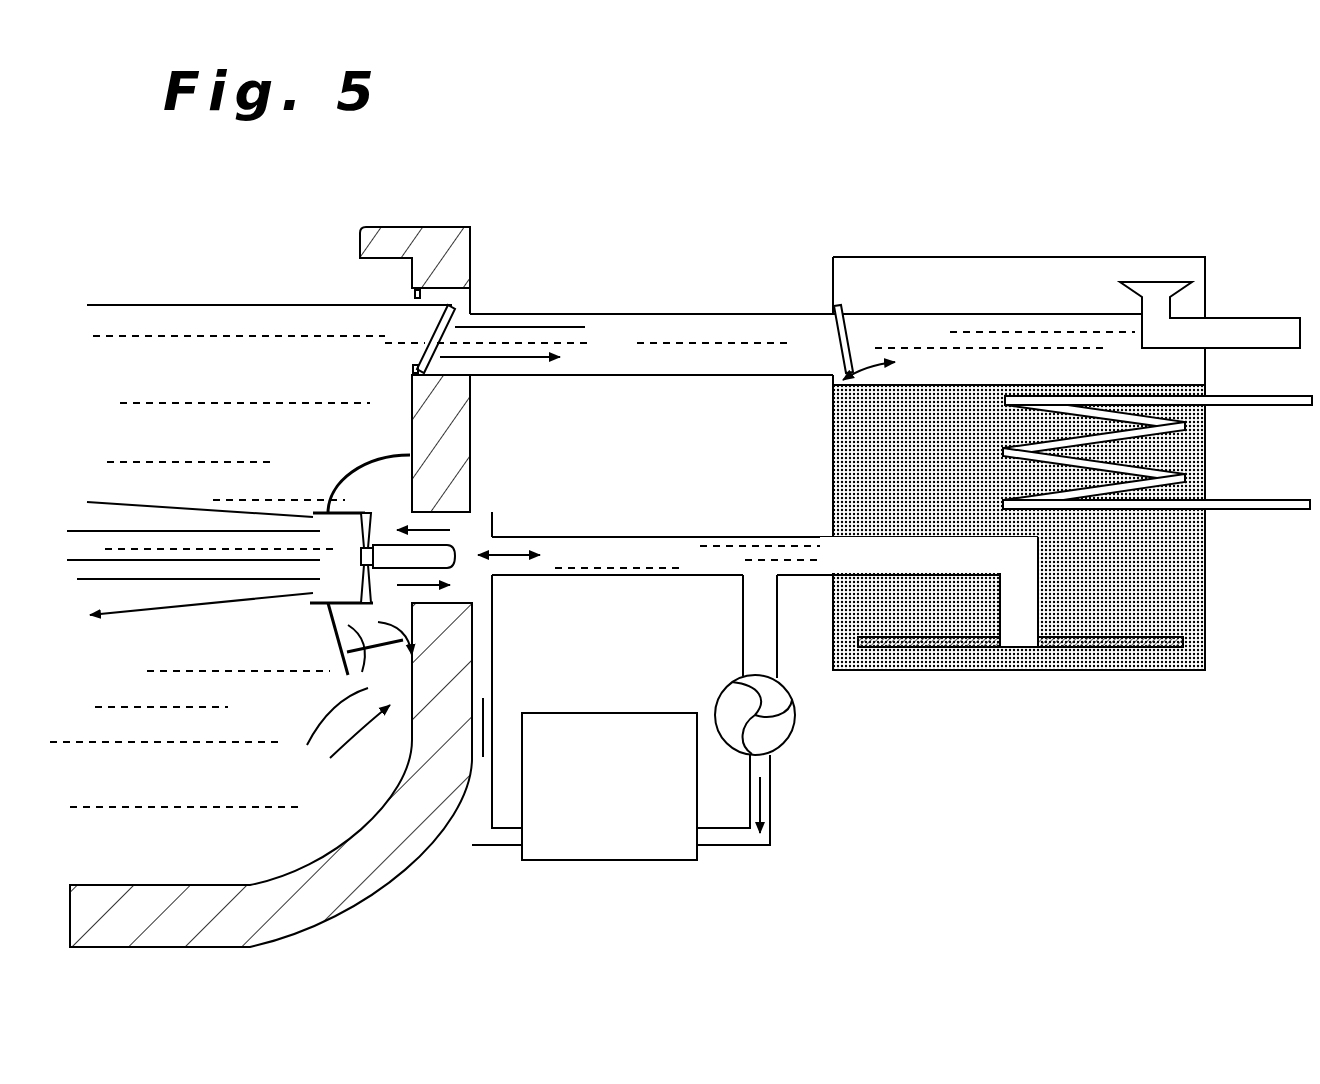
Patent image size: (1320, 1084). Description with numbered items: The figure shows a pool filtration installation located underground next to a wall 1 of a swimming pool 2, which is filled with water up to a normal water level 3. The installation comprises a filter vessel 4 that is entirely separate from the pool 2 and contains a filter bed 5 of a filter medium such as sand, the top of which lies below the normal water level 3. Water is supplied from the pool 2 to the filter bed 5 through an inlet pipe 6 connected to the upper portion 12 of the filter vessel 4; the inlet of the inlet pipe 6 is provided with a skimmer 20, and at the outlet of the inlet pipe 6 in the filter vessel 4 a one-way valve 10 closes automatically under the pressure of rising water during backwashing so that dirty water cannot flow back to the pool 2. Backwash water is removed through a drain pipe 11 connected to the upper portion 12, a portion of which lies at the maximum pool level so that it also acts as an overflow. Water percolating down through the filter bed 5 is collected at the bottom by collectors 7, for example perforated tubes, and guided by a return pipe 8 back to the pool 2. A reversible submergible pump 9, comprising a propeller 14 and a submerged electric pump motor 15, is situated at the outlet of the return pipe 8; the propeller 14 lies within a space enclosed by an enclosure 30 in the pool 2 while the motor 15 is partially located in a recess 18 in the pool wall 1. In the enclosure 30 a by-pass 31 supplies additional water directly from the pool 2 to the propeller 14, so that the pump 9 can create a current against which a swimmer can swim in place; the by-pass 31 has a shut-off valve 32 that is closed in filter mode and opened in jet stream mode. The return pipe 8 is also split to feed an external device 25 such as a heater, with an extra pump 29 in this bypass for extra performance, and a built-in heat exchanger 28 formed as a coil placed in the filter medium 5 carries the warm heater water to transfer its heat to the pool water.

The wall 1 is at (400, 868).
The swimming pool 2 is at (224, 388).
The normal water level 3 is at (237, 305).
The filter vessel 4 is at (1066, 467).
The filter bed 5 is at (1183, 553).
The inlet pipe 6 is at (700, 314).
The collectors 7 is at (1110, 650).
The return pipe 8 is at (648, 535).
The pump 9 is at (386, 518).
The one-way valve 10 is at (848, 335).
The drain pipe 11 is at (1262, 318).
The upper portion 12 is at (1207, 373).
The propeller 14 is at (378, 515).
The electric pump motor 15 is at (455, 560).
The recess 18 is at (470, 523).
The skimmer 20 is at (457, 327).
The external device 25 is at (594, 838).
The heat exchanger 28 is at (1185, 425).
The extra pump 29 is at (796, 718).
The enclosure 30 is at (355, 472).
The by-pass 31 is at (330, 645).
The shut-off valve 32 is at (362, 673).